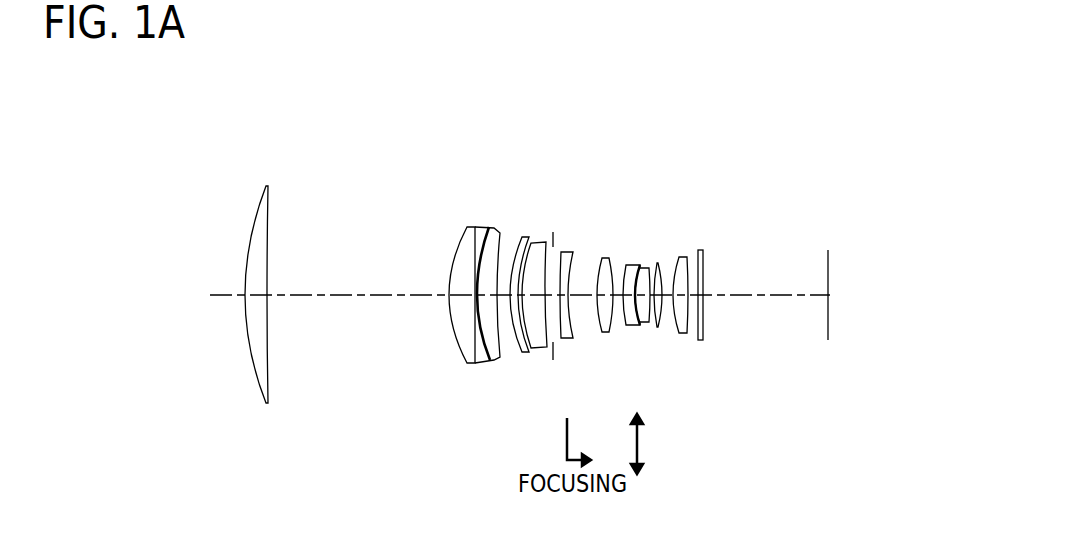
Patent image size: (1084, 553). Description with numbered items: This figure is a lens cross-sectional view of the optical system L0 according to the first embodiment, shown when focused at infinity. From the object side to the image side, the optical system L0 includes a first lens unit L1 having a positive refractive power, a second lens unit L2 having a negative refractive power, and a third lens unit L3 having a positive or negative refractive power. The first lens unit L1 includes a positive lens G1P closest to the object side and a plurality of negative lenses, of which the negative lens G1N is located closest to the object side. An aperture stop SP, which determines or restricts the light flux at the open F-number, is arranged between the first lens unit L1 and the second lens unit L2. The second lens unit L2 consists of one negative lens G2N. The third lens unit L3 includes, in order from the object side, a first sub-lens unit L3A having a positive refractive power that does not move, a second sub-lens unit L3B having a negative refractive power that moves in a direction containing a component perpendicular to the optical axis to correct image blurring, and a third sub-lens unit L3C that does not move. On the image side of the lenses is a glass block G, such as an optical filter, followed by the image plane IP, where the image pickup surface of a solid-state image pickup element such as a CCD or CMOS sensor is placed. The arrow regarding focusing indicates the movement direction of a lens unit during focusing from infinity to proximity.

The optical system L0 is at (708, 123).
The first lens unit L1 is at (557, 185).
The second lens unit L2 is at (585, 182).
The third lens unit L3 is at (708, 185).
The first sub-lens unit L3A is at (616, 247).
The second sub-lens unit L3B is at (648, 247).
The third sub-lens unit L3C is at (687, 247).
The positive lens G1P is at (252, 228).
The negative lens G1N is at (483, 232).
The negative lens G2N is at (568, 252).
The aperture stop SP is at (553, 358).
The glass block G is at (705, 259).
The image plane IP is at (828, 322).